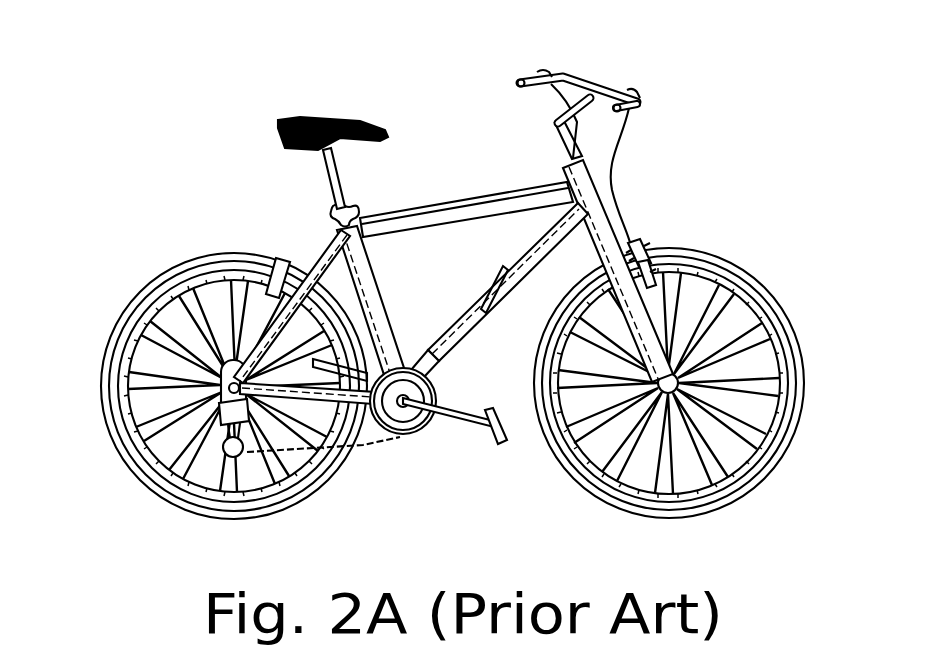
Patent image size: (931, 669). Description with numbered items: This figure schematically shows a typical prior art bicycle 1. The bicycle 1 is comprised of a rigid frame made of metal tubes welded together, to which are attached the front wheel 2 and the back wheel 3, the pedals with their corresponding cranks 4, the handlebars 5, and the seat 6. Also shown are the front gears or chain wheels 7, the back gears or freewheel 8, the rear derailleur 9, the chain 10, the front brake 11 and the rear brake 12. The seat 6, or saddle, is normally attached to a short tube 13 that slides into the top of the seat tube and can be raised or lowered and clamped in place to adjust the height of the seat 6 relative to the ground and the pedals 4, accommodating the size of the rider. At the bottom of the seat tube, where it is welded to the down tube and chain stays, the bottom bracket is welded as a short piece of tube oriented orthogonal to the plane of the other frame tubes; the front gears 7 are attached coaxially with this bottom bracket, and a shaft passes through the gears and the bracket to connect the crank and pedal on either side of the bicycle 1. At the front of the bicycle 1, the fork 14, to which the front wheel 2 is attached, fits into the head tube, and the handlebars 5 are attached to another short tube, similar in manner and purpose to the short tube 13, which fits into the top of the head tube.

The bicycle 1 is at (465, 80).
The front wheel 2 is at (776, 292).
The back wheel 3 is at (160, 278).
The pedals 4 is at (468, 358).
The handlebars 5 is at (558, 73).
The seat 6 is at (338, 120).
The front gears 7 is at (411, 437).
The back gears 8 is at (218, 393).
The rear derailleur 9 is at (226, 457).
The chain 10 is at (358, 447).
The front brake 11 is at (641, 254).
The rear brake 12 is at (280, 258).
The short tube 13 is at (346, 185).
The fork 14 is at (696, 278).